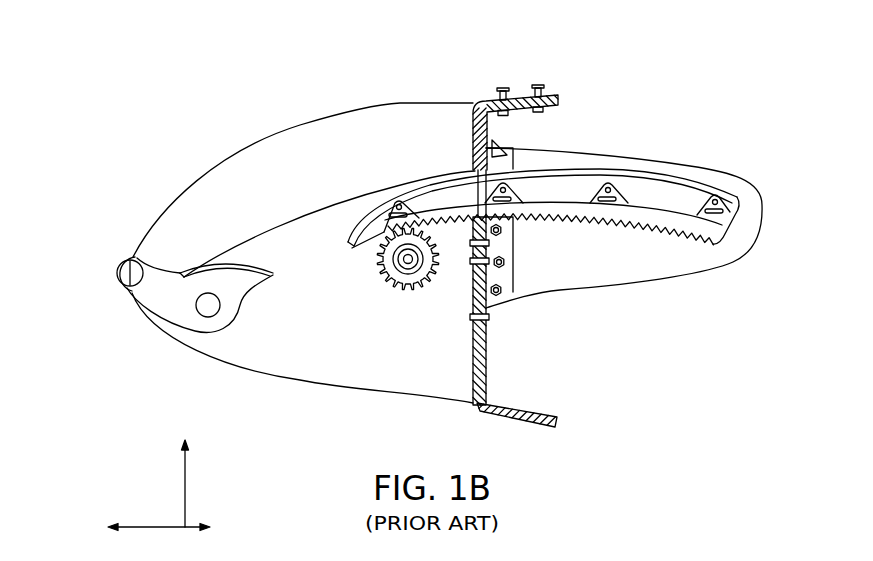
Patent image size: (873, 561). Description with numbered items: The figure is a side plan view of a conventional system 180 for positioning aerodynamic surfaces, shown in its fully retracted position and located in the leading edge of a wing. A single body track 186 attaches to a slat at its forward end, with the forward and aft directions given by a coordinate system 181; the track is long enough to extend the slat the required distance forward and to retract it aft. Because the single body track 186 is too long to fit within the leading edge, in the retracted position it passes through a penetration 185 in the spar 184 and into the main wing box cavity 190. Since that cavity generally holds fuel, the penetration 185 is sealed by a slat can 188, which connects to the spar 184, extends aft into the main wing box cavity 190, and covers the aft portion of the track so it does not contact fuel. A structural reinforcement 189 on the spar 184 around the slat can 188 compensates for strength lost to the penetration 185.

The conventional system 180 is at (196, 72).
The coordinate system 181 is at (168, 510).
The spar 184 is at (483, 338).
The penetration 185 is at (473, 168).
The single body track 186 is at (316, 215).
The slat can 188 is at (658, 282).
The structural reinforcement 189 is at (505, 152).
The main wing box cavity 190 is at (664, 385).